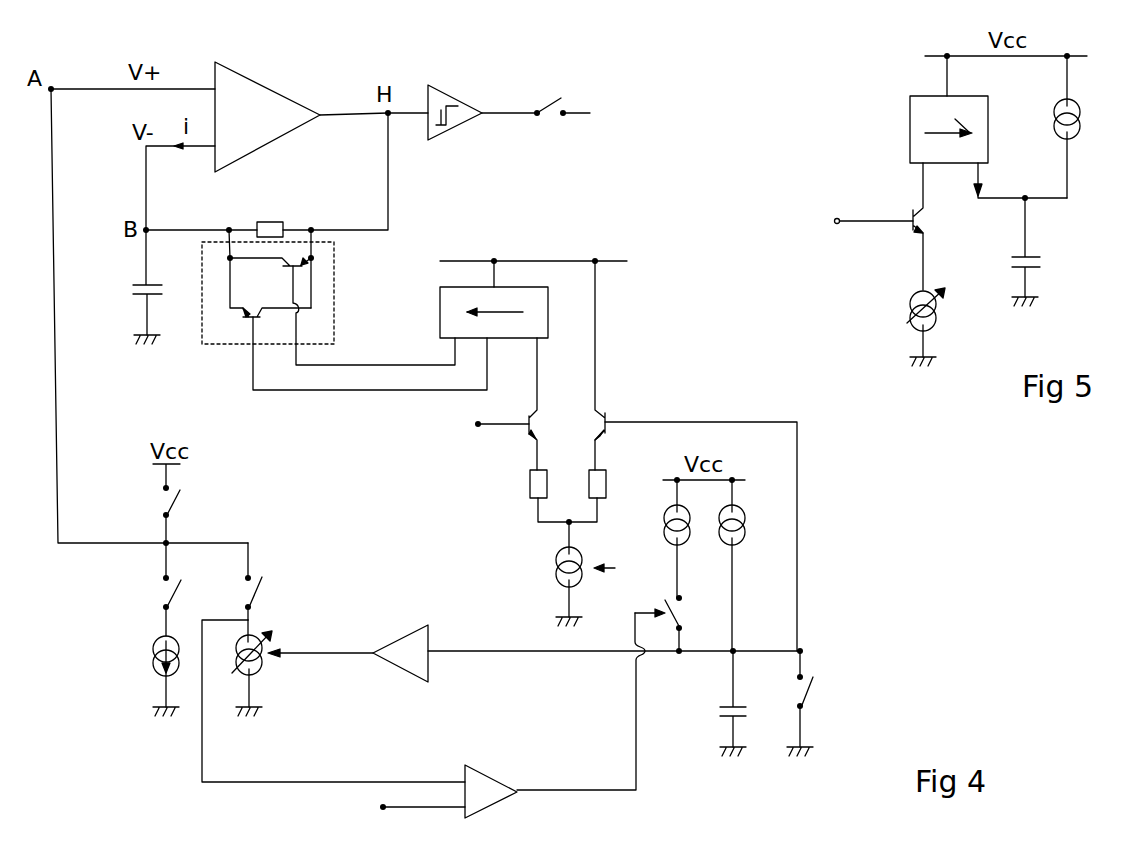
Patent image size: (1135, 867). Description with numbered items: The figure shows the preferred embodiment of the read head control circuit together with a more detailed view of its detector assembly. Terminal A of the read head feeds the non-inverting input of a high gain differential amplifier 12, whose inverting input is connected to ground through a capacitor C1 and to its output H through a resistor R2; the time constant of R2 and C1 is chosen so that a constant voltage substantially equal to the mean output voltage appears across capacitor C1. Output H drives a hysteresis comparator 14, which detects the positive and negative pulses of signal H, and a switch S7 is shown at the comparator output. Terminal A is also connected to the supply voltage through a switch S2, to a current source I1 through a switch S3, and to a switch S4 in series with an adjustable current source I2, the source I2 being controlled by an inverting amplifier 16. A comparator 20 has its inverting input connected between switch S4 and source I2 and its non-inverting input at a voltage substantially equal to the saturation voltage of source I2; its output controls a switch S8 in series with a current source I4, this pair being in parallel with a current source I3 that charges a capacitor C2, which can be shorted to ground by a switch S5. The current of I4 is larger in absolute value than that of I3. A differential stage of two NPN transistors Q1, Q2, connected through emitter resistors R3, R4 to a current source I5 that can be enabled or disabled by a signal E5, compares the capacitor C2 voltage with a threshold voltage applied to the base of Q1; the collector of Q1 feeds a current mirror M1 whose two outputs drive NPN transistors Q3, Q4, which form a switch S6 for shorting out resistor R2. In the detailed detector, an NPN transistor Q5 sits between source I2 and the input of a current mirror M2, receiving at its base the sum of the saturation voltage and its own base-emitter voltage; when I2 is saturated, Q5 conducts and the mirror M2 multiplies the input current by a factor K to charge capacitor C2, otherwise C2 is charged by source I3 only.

In FIG. 4, the high gain differential amplifier 12 is at (252, 100).
In FIG. 4, the hysteresis comparator 14 is at (440, 100).
In FIG. 4, the inverting amplifier 16 is at (406, 630).
In FIG. 4, the comparator 20 is at (488, 798).
In FIG. 4, the switch S7 is at (548, 92).
In FIG. 4, the resistor R2 is at (270, 215).
In FIG. 4, the capacitor C1 is at (130, 287).
In FIG. 4, the switch S6 is at (330, 310).
In FIG. 4, the NPN transistor Q3 is at (292, 263).
In FIG. 4, the NPN transistor Q4 is at (247, 322).
In FIG. 4, the current mirror M1 is at (548, 303).
In FIG. 4, the NPN transistor Q1 is at (507, 404).
In FIG. 4, the NPN transistor Q2 is at (696, 456).
In FIG. 4, the emitter resistor R3 is at (521, 485).
In FIG. 4, the emitter resistor R4 is at (614, 485).
In FIG. 4, the current source I5 is at (555, 586).
In FIG. 4, the signal E5 is at (613, 556).
In FIG. 4, the current source I4 is at (660, 539).
In FIG. 5, the current source I4 is at (1020, 180).
In FIG. 4, the current source I3 is at (745, 565).
In FIG. 5, the current source I3 is at (1081, 127).
In FIG. 4, the switch S8 is at (677, 623).
In FIG. 4, the capacitor C2 is at (713, 703).
In FIG. 5, the capacitor C2 is at (1045, 252).
In FIG. 4, the switch S5 is at (816, 703).
In FIG. 4, the switch S2 is at (149, 531).
In FIG. 4, the switch S3 is at (148, 605).
In FIG. 4, the switch S4 is at (272, 581).
In FIG. 4, the current source I1 is at (148, 676).
In FIG. 4, the adjustable current source I2 is at (237, 668).
In FIG. 5, the adjustable current source I2 is at (937, 327).
In FIG. 5, the current mirror M2 is at (910, 97).
In FIG. 5, the NPN transistor Q5 is at (847, 226).